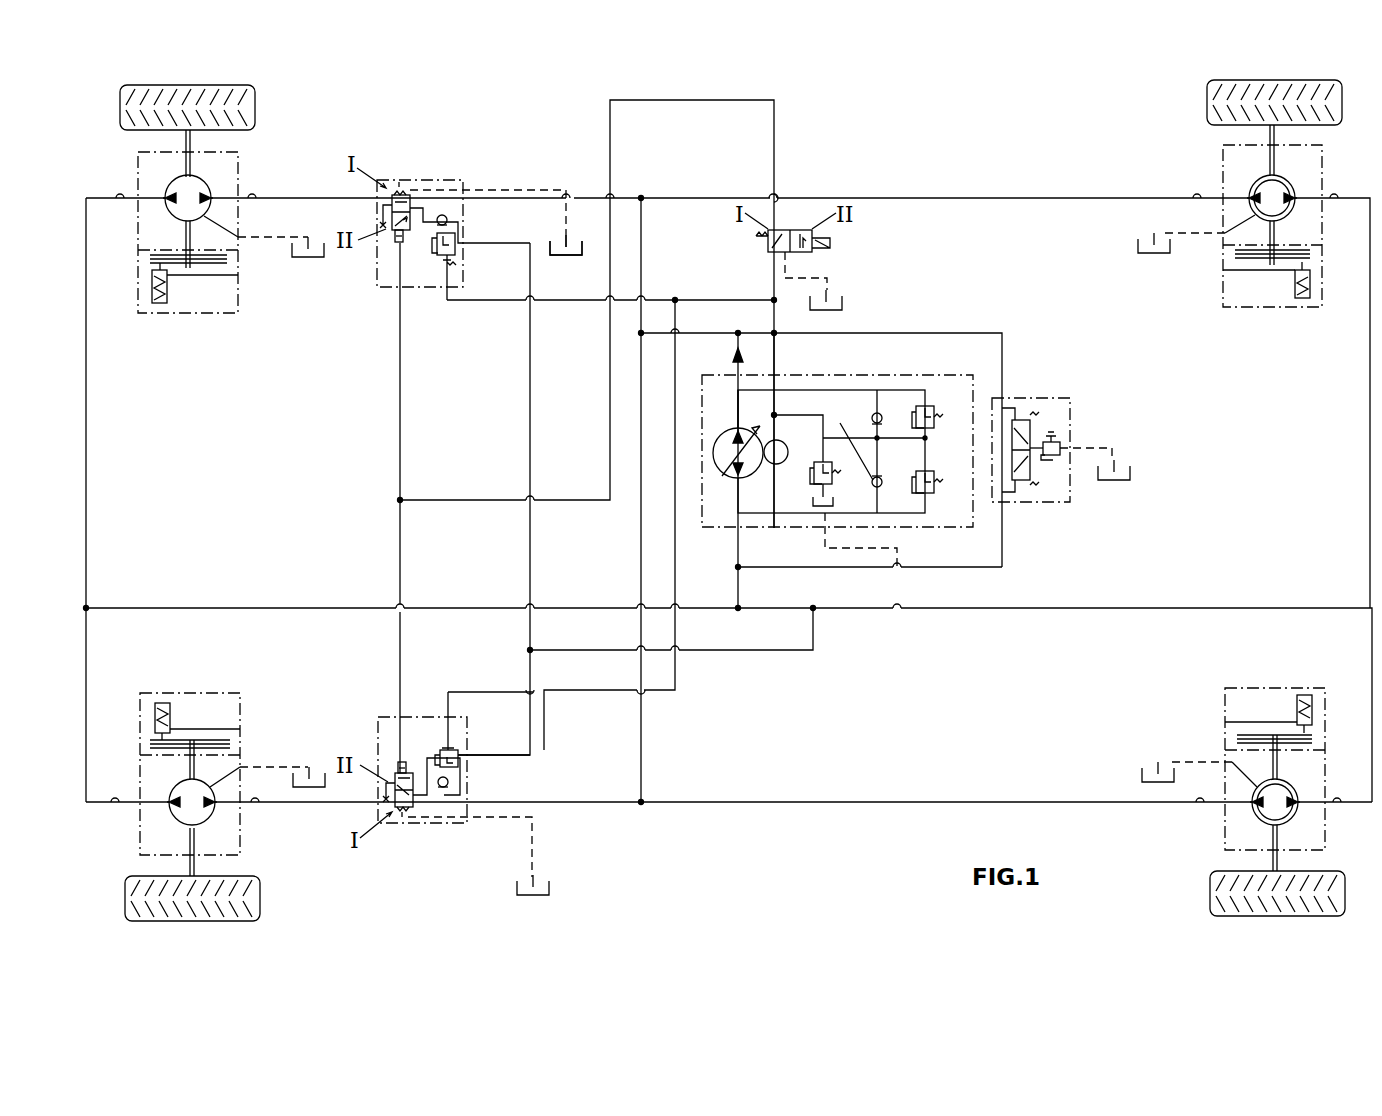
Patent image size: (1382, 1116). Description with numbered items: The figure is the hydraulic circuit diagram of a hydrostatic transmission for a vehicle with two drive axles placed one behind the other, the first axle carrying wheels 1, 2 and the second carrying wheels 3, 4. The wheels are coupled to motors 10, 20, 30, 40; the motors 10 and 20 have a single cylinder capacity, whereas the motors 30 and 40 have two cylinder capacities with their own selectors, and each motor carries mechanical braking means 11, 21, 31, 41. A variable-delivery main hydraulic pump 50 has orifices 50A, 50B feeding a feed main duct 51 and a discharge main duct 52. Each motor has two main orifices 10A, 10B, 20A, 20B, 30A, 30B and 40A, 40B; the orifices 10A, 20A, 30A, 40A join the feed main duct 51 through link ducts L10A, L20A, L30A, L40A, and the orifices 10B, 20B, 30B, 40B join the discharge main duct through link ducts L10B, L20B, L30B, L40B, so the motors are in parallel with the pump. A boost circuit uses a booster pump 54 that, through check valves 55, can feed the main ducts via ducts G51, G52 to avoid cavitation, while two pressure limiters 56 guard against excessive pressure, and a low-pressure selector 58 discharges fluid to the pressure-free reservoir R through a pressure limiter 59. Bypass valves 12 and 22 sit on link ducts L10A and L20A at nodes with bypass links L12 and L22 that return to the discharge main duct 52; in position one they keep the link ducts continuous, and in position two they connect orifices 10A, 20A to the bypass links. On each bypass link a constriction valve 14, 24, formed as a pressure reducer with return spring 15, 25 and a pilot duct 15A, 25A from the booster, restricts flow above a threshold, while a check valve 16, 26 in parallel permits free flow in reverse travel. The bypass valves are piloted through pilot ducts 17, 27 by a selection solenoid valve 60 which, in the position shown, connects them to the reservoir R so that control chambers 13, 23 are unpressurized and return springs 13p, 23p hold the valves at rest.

The wheel 1 is at (255, 93).
The wheel 2 is at (258, 903).
The wheel 3 is at (1207, 98).
The wheel 4 is at (1210, 897).
The motor 10 is at (196, 190).
The main orifice 10A is at (238, 195).
The main orifice 10B is at (162, 195).
The mechanical braking means 11 is at (208, 300).
The bypass valve 12 is at (408, 193).
The control chamber 13 is at (384, 242).
The return spring 13p is at (398, 186).
The constriction valve 14 is at (429, 292).
The return spring 15 is at (452, 268).
The pilot duct 15A is at (482, 302).
The check valve 16 is at (447, 220).
The pilot duct 17 is at (400, 378).
The motor 20 is at (200, 815).
The main orifice 20A is at (236, 812).
The main orifice 20B is at (164, 812).
The mechanical braking means 21 is at (210, 712).
The bypass valve 22 is at (413, 816).
The control chamber 23 is at (396, 766).
The return spring 23p is at (402, 821).
The constriction valve 24 is at (438, 745).
The return spring 25 is at (450, 746).
The pilot duct 25A is at (565, 692).
The check valve 26 is at (450, 784).
The pilot duct 27 is at (400, 578).
The motor 30 is at (1280, 188).
The main orifice 30A is at (1252, 196).
The main orifice 30B is at (1292, 196).
The mechanical braking means 31 is at (1265, 298).
The motor 40 is at (1290, 815).
The main orifice 40A is at (1252, 808).
The main orifice 40B is at (1296, 812).
The mechanical braking means 41 is at (1260, 712).
The main hydraulic pump 50 is at (714, 448).
The orifice 50A is at (735, 412).
The orifice 50B is at (738, 492).
The feed main duct 51 is at (740, 346).
The discharge main duct 52 is at (740, 585).
The booster pump 54 is at (782, 462).
The check valves 55 is at (871, 421).
The pressure limiters 56 is at (930, 427).
The low-pressure selector 58 is at (1036, 470).
The pressure limiter 59 is at (1062, 447).
The selection solenoid valve 60 is at (796, 228).
The duct G51 is at (800, 389).
The duct G52 is at (823, 530).
The link duct L10A is at (576, 198).
The link duct L10B is at (86, 352).
The bypass link L12 is at (530, 378).
The link duct L20A is at (594, 802).
The link duct L20B is at (86, 640).
The bypass link L22 is at (530, 672).
The link duct L30A is at (922, 198).
The link duct L30B is at (1370, 376).
The link duct L40A is at (922, 802).
The link duct L40B is at (1372, 638).
The pressure-free reservoir R is at (568, 250).